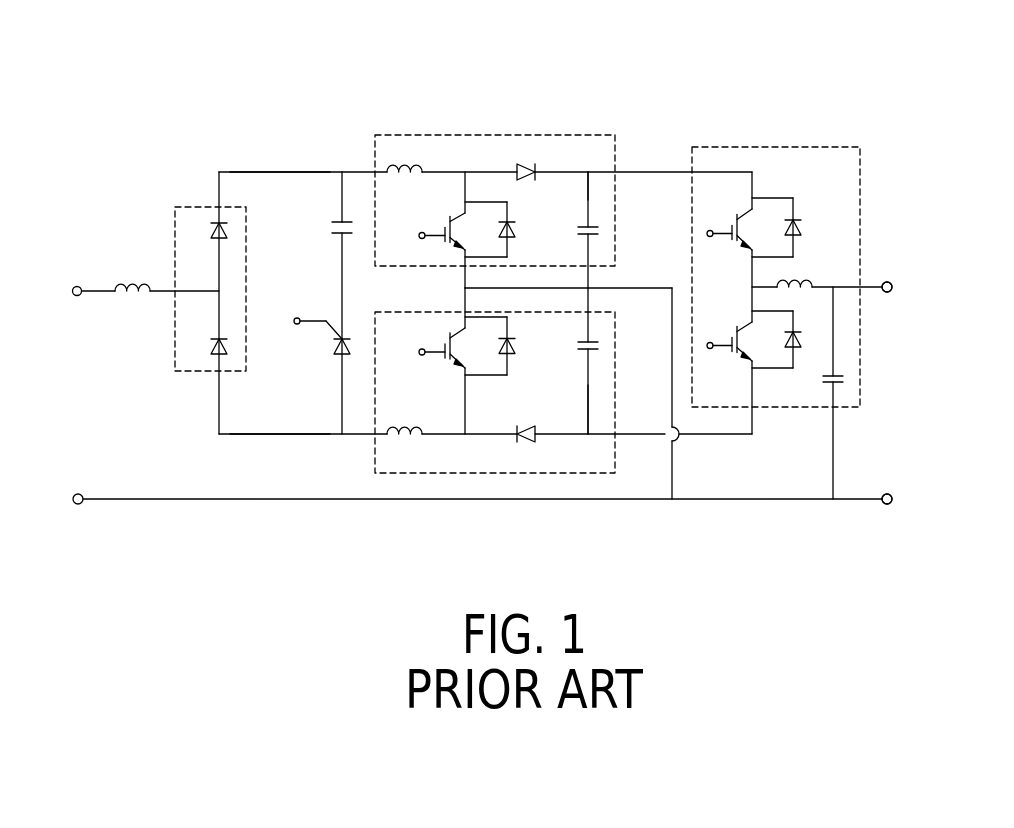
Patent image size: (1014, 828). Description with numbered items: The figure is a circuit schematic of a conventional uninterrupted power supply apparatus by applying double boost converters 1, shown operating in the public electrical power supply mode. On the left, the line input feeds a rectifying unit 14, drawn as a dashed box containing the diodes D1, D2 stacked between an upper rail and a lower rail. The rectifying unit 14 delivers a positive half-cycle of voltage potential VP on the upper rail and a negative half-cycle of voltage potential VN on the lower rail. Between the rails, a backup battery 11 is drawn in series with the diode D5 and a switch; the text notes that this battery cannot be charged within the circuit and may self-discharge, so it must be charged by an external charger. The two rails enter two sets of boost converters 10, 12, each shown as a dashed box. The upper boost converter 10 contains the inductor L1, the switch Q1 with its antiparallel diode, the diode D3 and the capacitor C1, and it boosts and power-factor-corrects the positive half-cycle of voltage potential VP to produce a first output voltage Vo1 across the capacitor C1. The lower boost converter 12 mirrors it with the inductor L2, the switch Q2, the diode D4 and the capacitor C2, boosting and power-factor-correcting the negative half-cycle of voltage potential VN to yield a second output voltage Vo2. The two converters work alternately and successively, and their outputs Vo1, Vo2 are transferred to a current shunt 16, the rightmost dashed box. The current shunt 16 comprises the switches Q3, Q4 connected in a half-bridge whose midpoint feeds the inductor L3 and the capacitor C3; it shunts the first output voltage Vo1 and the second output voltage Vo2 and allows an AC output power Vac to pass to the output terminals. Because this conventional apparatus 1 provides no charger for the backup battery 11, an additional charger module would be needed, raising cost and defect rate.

The uninterrupted power supply apparatus by applying double boost converters 1 is at (93, 64).
The rectifying unit 14 is at (201, 207).
The backup battery 11 is at (327, 233).
The boost converter 10 is at (461, 135).
The boost converter 12 is at (441, 473).
The current shunt 16 is at (781, 147).
The diode D1 is at (206, 231).
The diode D2 is at (206, 349).
The diode D3 is at (526, 157).
The diode D4 is at (528, 449).
The diode D5 is at (322, 342).
The inductor L1 is at (404, 152).
The inductor L2 is at (404, 450).
The output inductor L3 is at (822, 274).
The switch Q1 is at (467, 230).
The switch Q2 is at (467, 361).
The switch Q3 is at (754, 247).
The switch Q4 is at (754, 372).
The capacitor C1 is at (573, 230).
The capacitor C2 is at (573, 361).
The output capacitor C3 is at (820, 393).
The positive half-cycle of voltage potential VP is at (277, 172).
The negative half-cycle of voltage potential VN is at (281, 434).
The first output voltage Vo1 is at (588, 197).
The second output voltage Vo2 is at (588, 391).
The AC output power Vac is at (902, 379).